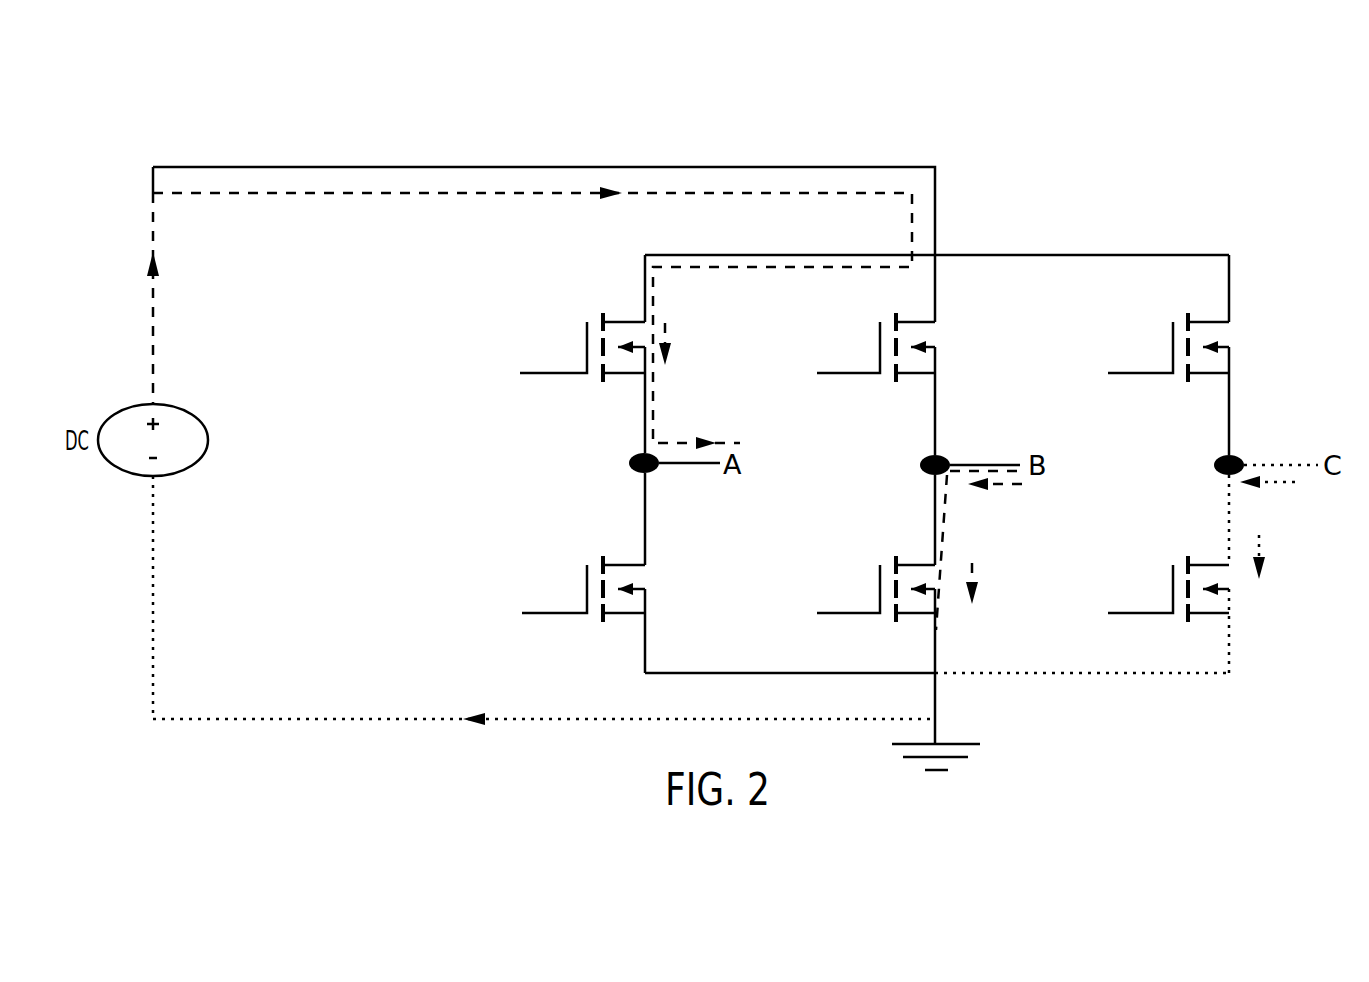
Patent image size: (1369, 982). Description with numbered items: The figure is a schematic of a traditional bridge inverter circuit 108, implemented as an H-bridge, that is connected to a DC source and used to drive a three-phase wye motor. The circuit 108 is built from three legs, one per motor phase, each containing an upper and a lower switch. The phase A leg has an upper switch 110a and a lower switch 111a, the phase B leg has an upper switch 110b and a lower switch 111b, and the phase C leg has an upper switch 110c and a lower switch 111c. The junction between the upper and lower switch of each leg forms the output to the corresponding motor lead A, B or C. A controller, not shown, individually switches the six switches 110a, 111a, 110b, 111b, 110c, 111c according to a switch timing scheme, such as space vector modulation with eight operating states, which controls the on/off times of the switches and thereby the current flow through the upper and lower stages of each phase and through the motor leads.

The traditional bridge inverter circuit 108 is at (140, 142).
The phase A upper switch 110a is at (470, 305).
The phase A lower switch 111a is at (458, 530).
The phase B upper switch 110b is at (786, 345).
The phase B lower switch 111b is at (783, 583).
The phase C upper switch 110c is at (1165, 296).
The phase C lower switch 111c is at (1158, 552).